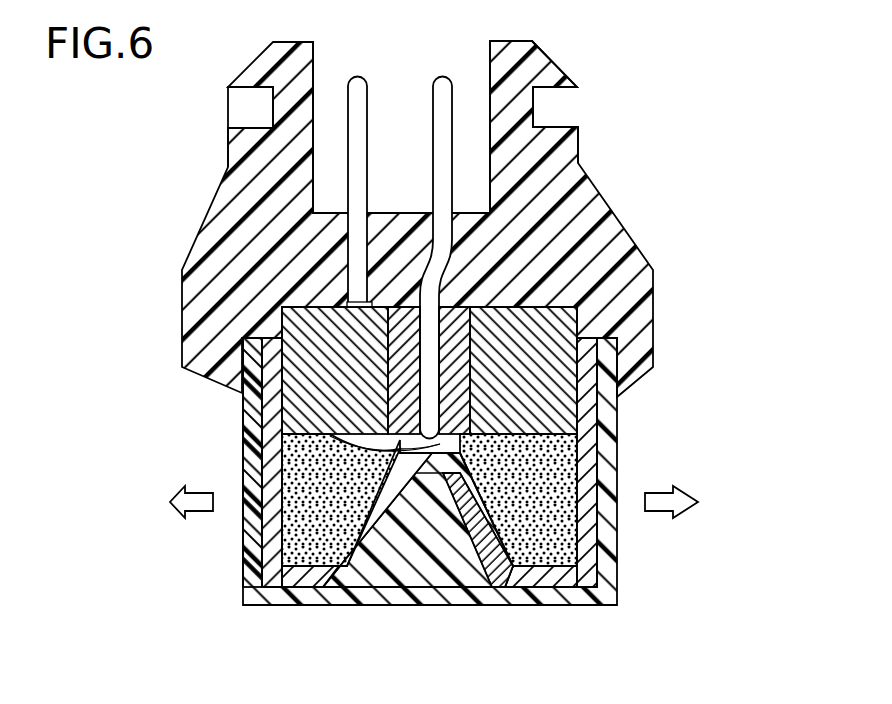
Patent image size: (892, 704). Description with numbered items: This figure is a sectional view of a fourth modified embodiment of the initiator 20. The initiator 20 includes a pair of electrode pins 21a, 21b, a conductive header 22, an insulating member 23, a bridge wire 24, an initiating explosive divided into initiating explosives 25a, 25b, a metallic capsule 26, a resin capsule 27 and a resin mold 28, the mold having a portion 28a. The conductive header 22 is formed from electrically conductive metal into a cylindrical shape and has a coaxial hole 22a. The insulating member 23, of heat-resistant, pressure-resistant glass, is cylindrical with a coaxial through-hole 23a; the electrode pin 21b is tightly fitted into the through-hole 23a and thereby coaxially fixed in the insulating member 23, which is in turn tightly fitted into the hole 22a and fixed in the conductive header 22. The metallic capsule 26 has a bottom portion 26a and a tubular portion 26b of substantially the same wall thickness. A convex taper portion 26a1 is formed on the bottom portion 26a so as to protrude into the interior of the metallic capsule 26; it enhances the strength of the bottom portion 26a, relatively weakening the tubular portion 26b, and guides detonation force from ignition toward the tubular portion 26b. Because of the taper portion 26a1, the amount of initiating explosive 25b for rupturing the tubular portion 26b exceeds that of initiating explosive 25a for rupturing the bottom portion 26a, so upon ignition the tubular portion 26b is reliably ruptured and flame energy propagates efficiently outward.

The initiator 20 is at (611, 181).
The electrode pin 21a is at (357, 88).
The electrode pin 21b is at (441, 86).
The conductive header 22 is at (557, 340).
The hole 22a is at (460, 340).
The insulating member 23 is at (403, 318).
The through-hole 23a is at (432, 365).
The bridge wire 24 is at (355, 447).
The initiating explosive 25a is at (433, 450).
The initiating explosive 25b is at (567, 540).
The metallic capsule 26 is at (262, 462).
The bottom portion 26a is at (542, 583).
The taper portion 26a1 is at (388, 520).
The tubular portion 26b is at (592, 462).
The resin capsule 27 is at (248, 545).
The resin mold 28 is at (218, 203).
The housing hook 28a is at (548, 74).